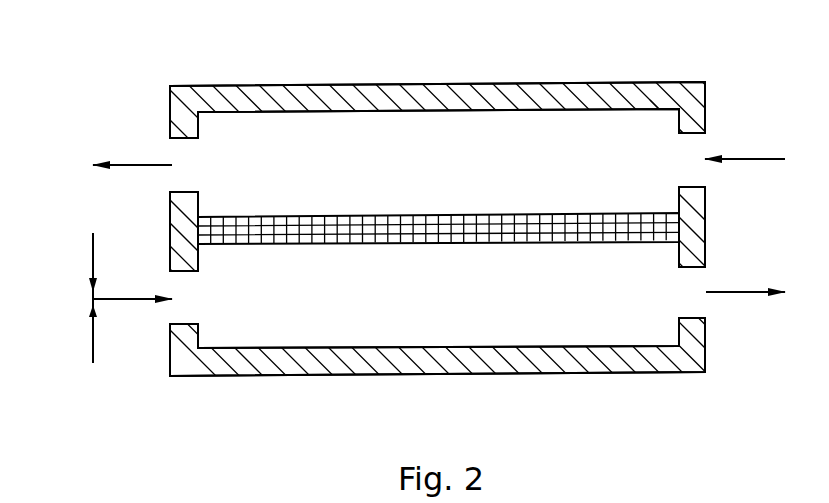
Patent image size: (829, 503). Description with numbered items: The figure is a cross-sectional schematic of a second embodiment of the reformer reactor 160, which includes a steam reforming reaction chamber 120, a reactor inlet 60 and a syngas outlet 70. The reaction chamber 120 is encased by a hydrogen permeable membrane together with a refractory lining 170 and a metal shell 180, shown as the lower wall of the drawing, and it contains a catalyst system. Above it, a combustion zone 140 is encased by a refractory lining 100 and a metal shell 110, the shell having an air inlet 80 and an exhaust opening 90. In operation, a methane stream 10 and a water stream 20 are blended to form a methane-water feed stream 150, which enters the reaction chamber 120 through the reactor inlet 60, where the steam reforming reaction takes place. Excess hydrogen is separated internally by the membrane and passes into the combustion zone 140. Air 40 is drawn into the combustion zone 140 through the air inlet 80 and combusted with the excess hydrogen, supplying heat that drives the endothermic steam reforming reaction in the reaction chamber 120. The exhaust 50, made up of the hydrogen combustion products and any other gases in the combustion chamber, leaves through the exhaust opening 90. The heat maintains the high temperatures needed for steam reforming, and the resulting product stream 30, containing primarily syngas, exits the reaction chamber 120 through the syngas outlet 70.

The methane stream 10 is at (93, 253).
The water stream 20 is at (93, 342).
The product stream 30 is at (730, 293).
The air 40 is at (752, 160).
The exhaust 50 is at (142, 167).
The reactor inlet 60 is at (172, 285).
The syngas outlet 70 is at (707, 283).
The air inlet 80 is at (702, 148).
The exhaust opening 90 is at (172, 153).
The refractory lining 100 is at (372, 92).
The metal shell 110 is at (570, 80).
The steam reforming reaction chamber 120 is at (518, 308).
The combustion zone 140 is at (470, 175).
The methane-water feed stream 150 is at (140, 300).
The reformer reactor 160 is at (548, 406).
The refractory lining 170 is at (278, 360).
The metal shell 180 is at (363, 377).